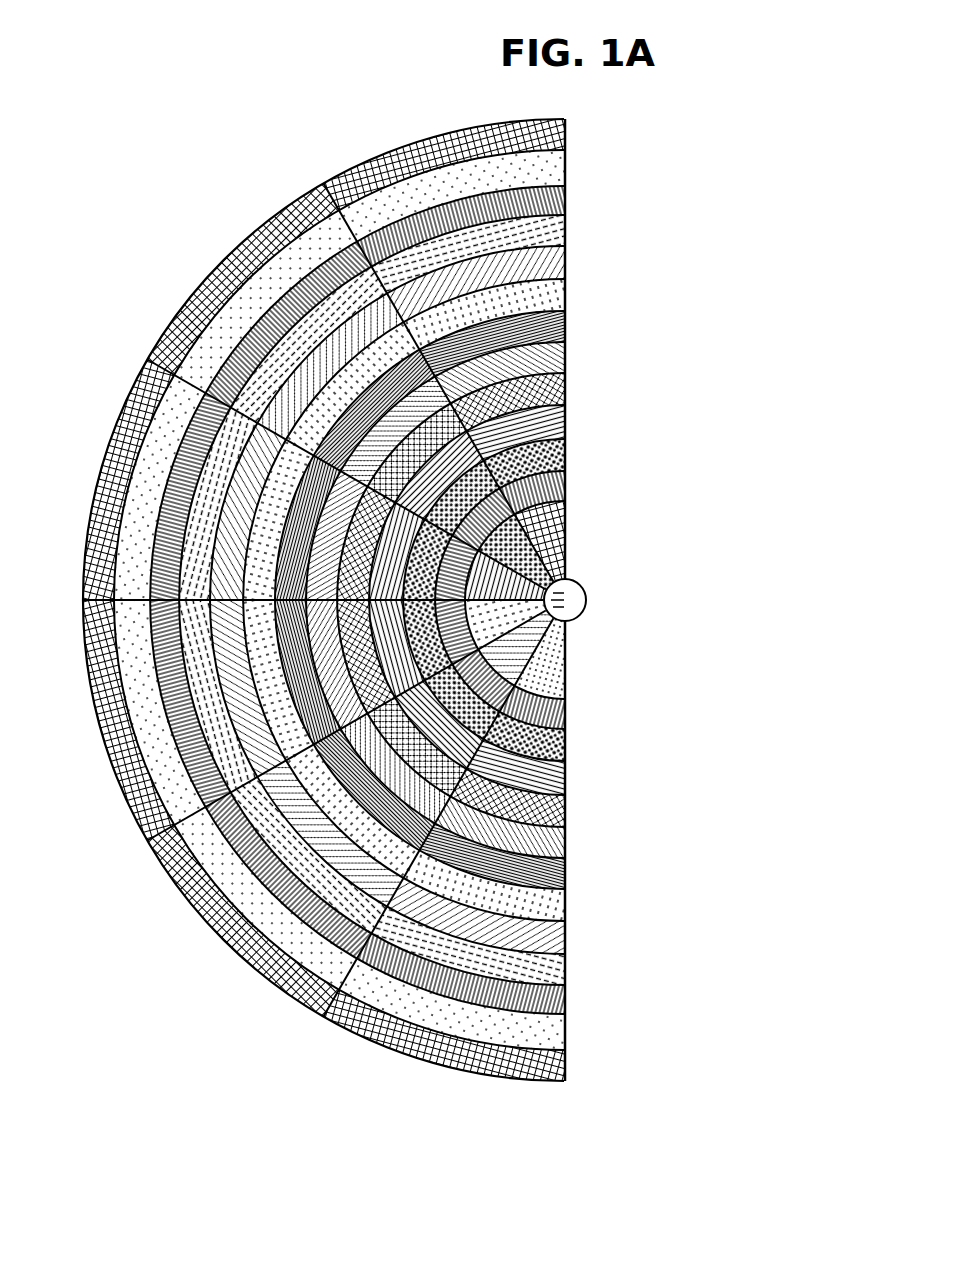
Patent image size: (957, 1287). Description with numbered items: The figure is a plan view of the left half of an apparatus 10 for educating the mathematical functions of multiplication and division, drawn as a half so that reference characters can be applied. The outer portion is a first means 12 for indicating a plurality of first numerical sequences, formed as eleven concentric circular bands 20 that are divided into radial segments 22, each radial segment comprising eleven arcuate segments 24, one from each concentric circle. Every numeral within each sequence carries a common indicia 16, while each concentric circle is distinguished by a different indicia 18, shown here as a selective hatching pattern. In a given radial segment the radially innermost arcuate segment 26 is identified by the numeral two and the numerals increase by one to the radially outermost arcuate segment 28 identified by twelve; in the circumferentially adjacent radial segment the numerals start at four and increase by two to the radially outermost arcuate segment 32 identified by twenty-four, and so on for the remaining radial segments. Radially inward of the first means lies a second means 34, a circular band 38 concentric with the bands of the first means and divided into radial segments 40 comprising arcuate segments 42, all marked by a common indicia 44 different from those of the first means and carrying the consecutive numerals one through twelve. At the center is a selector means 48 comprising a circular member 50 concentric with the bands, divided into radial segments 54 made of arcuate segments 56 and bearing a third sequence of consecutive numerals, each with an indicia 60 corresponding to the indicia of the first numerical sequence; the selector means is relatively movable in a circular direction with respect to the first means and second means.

The apparatus 10 is at (250, 87).
The first means 12 is at (605, 188).
The common indicia 16 is at (518, 1082).
The different indicia 18 is at (570, 1032).
The circular bands 20 is at (202, 922).
The radial segments 22 is at (238, 957).
The arcuate segments 24 is at (293, 1000).
The radially innermost arcuate segment 26 is at (562, 442).
The radially outermost arcuate segment 28 is at (107, 758).
The radially outermost arcuate segment 32 is at (122, 402).
The second means 34 is at (568, 472).
The circular band 38 is at (568, 483).
The radial segments 40 is at (568, 493).
The arcuate segments 42 is at (568, 709).
The common indicia 44 is at (568, 726).
The selector means 48 is at (568, 515).
The circular member 50 is at (568, 547).
The radial segments 54 is at (570, 635).
The arcuate segments 56 is at (568, 562).
The indicia 60 is at (568, 660).